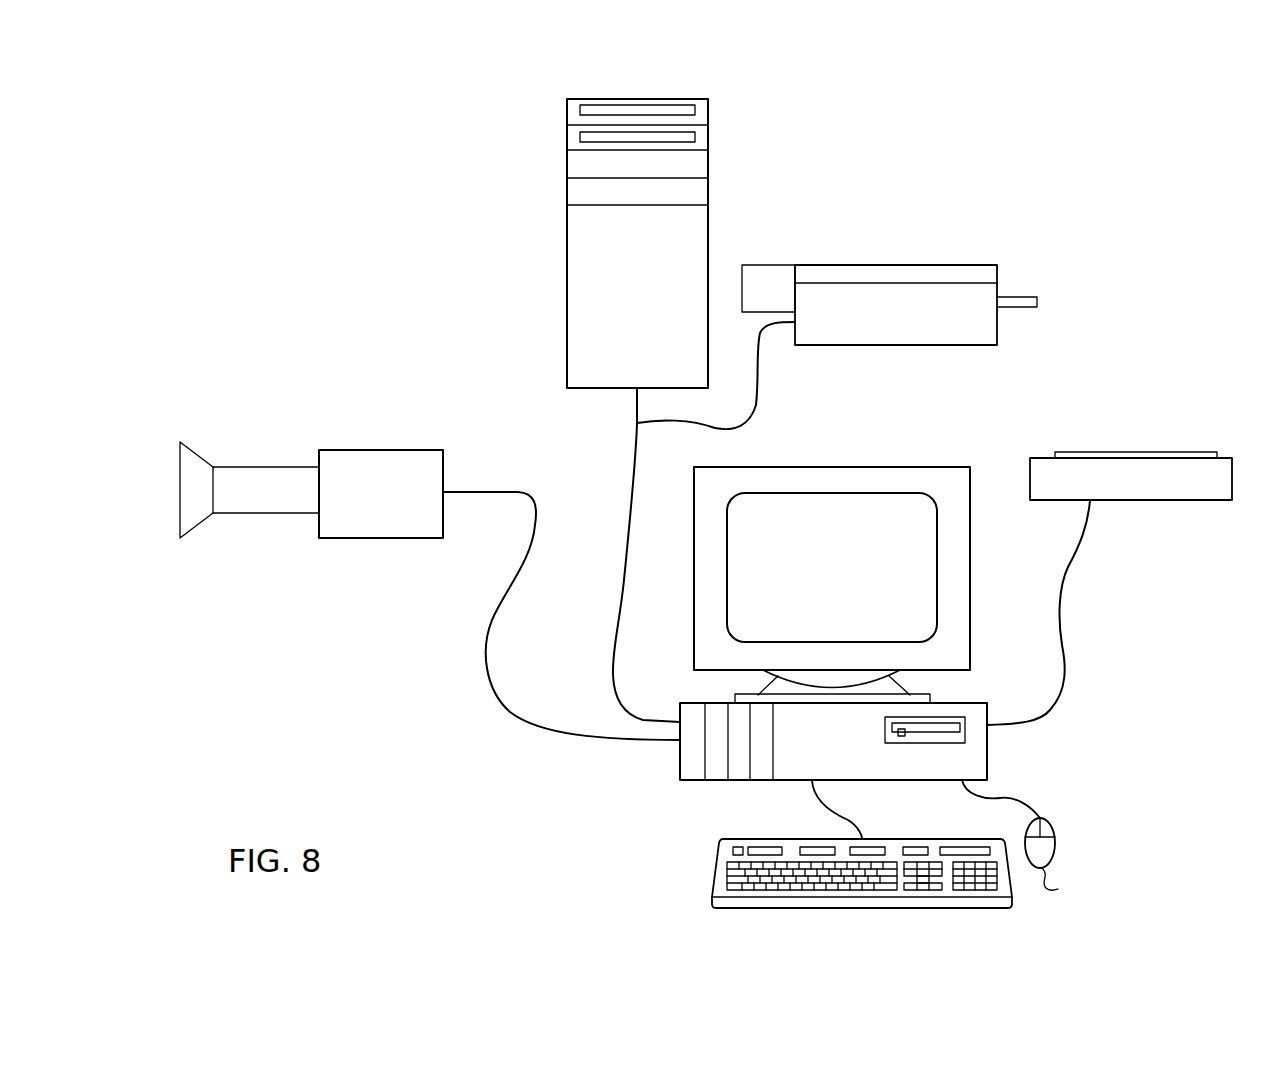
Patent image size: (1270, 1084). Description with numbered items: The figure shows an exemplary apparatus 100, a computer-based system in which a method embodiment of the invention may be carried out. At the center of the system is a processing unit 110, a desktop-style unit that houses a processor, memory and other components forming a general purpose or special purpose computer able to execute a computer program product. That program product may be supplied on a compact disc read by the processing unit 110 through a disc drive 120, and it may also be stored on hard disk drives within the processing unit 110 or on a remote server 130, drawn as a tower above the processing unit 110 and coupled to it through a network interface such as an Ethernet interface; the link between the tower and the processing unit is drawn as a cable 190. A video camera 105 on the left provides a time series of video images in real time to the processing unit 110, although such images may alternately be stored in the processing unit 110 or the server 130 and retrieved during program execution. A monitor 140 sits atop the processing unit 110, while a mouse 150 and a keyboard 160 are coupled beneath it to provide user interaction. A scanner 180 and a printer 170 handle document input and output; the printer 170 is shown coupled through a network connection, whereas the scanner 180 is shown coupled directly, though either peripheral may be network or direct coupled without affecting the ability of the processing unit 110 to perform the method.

The apparatus 100 is at (1153, 160).
The video camera 105 is at (350, 450).
The processing unit 110 is at (680, 757).
The disc drive 120 is at (695, 110).
The server 130 is at (708, 226).
The monitor 140 is at (911, 467).
The mouse 150 is at (1032, 838).
The keyboard 160 is at (714, 870).
The printer 170 is at (952, 265).
The scanner 180 is at (1177, 452).
The cable 190 is at (634, 468).